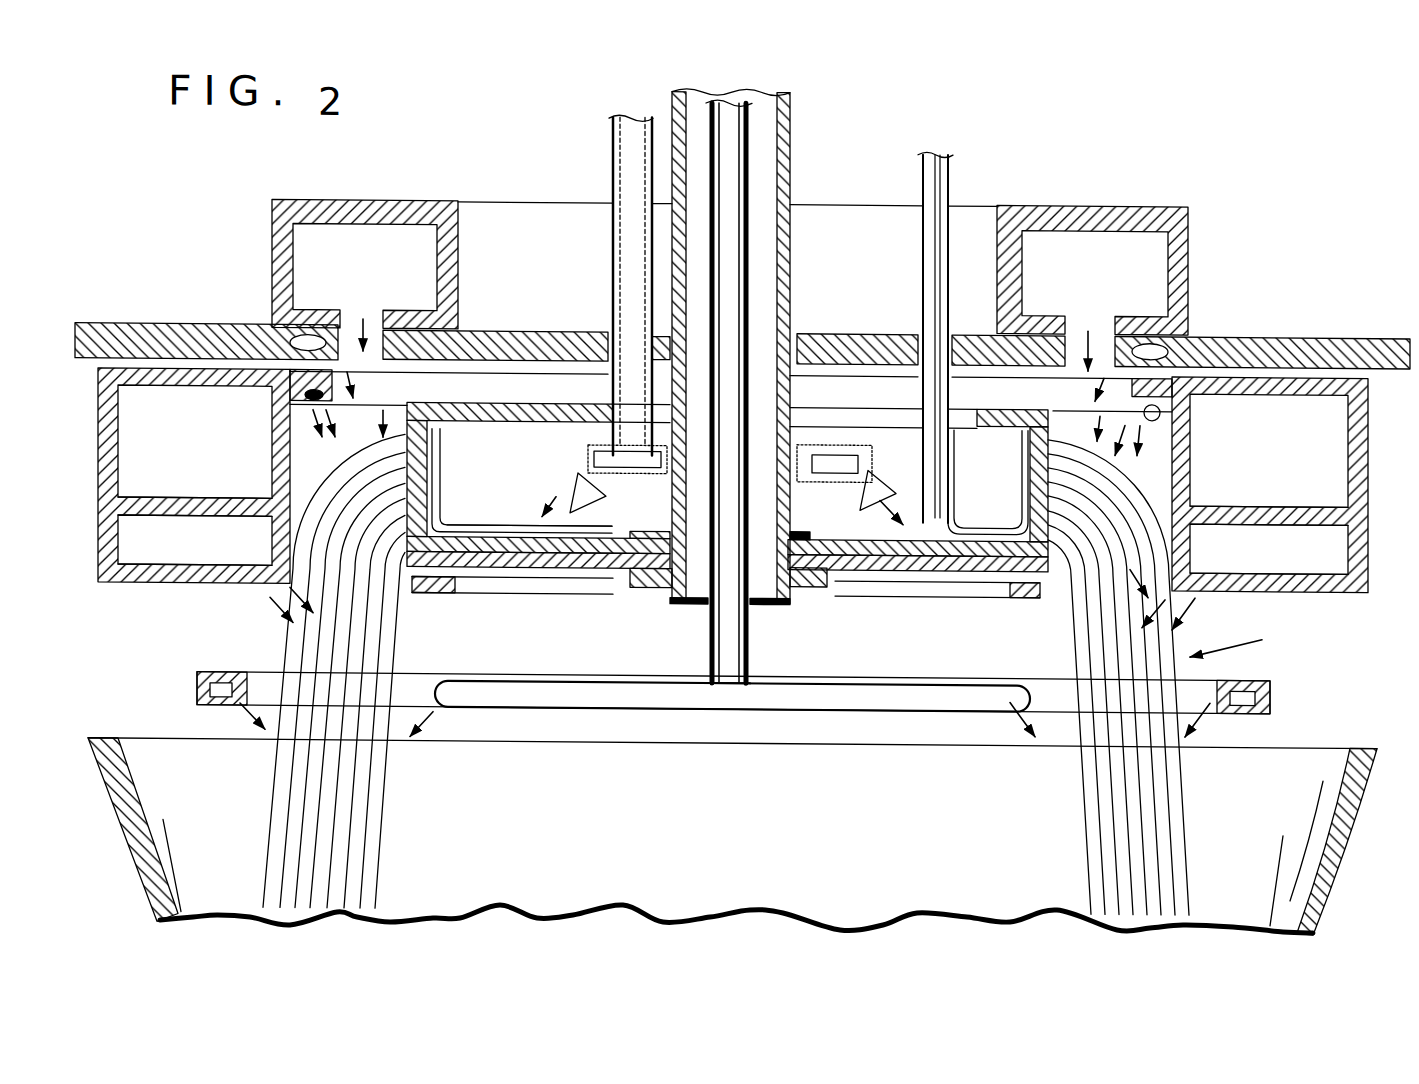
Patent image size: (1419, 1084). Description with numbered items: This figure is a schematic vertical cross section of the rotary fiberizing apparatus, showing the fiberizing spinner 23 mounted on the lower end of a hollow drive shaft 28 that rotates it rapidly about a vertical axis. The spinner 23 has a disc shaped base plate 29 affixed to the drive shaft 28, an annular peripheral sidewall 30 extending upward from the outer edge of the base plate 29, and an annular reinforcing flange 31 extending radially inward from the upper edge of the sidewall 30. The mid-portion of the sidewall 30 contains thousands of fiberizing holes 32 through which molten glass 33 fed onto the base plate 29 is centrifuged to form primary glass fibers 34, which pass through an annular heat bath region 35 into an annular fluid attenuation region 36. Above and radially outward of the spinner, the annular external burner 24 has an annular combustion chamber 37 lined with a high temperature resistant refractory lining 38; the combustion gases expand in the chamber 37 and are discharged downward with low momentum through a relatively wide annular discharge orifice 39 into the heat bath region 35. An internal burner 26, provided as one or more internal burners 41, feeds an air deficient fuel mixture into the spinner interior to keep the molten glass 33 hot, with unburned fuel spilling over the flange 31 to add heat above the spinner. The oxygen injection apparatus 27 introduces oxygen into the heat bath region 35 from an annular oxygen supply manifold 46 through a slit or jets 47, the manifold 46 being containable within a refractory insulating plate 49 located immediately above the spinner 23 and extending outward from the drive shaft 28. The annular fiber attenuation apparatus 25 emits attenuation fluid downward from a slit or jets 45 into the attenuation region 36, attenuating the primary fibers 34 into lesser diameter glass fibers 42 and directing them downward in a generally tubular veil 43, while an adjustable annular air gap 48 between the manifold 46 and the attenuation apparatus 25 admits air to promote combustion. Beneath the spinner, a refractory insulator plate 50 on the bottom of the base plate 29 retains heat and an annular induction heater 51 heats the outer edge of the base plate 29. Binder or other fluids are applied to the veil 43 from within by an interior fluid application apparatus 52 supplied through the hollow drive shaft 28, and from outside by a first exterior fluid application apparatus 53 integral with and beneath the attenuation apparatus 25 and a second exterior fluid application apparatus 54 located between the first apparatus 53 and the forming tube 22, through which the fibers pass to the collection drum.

The forming tube 22 is at (142, 820).
The fiberizing spinner 23 is at (621, 522).
The external burner 24 is at (1197, 198).
The fiber attenuation apparatus 25 is at (164, 444).
The internal burner 26 is at (590, 450).
The oxygen injection apparatus 27 is at (1178, 323).
The hollow drive shaft 28 is at (793, 142).
The base plate 29 is at (822, 500).
The annular peripheral sidewall 30 is at (442, 485).
The annular reinforcing flange 31 is at (450, 396).
The fiberizing holes 32 is at (442, 431).
The molten glass 33 is at (952, 166).
The primary glass fibers 34 is at (371, 396).
The annular heat bath region 35 is at (1064, 441).
The annular fluid attenuation region 36 is at (301, 477).
The annular combustion chamber 37 is at (341, 267).
The refractory lining 38 is at (460, 256).
The annular discharge orifice 39 is at (460, 292).
The internal burners 41 is at (576, 488).
The lesser diameter glass fibers 42 is at (334, 647).
The tubular veil 43 is at (1243, 639).
The slits or jets of attenuation apparatus 45 is at (1163, 402).
The annular oxygen supply manifold 46 is at (285, 329).
The slits or jets of oxygen supply manifold 47 is at (361, 315).
The adjustable annular air gap 48 is at (1294, 356).
The refractory insulating plate 49 is at (808, 322).
The refractory insulator plate 50 is at (545, 564).
The annular induction heater 51 is at (445, 592).
The interior fluid application apparatus 52 is at (658, 704).
The first exterior fluid application apparatus 53 is at (164, 552).
The second exterior fluid application apparatus 54 is at (196, 686).